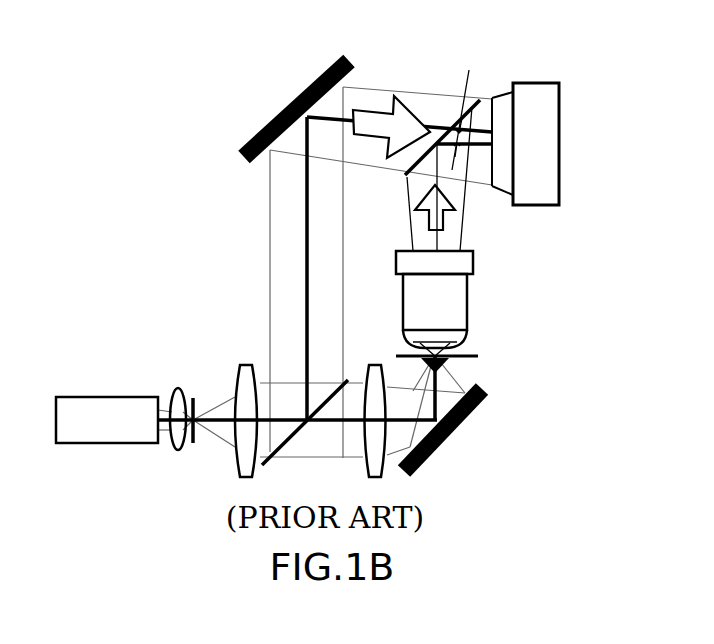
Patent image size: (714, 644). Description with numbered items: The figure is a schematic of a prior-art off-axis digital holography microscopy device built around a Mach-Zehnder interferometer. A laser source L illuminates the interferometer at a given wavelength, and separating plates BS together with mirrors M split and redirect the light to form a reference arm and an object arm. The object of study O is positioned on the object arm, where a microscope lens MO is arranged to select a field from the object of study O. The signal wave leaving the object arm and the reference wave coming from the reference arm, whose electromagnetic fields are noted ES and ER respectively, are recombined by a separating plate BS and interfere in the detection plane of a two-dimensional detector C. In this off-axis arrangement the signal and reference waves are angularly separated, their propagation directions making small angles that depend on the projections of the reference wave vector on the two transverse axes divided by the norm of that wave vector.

The laser source L is at (107, 437).
The separating plate BS is at (371, 302).
The mirror M is at (363, 267).
The electromagnetic field of the reference wave ER is at (428, 94).
The electromagnetic field of the signal wave ES is at (460, 229).
The two-dimensional detector C is at (538, 144).
The microscope lens MO is at (456, 299).
The object of study O is at (457, 359).